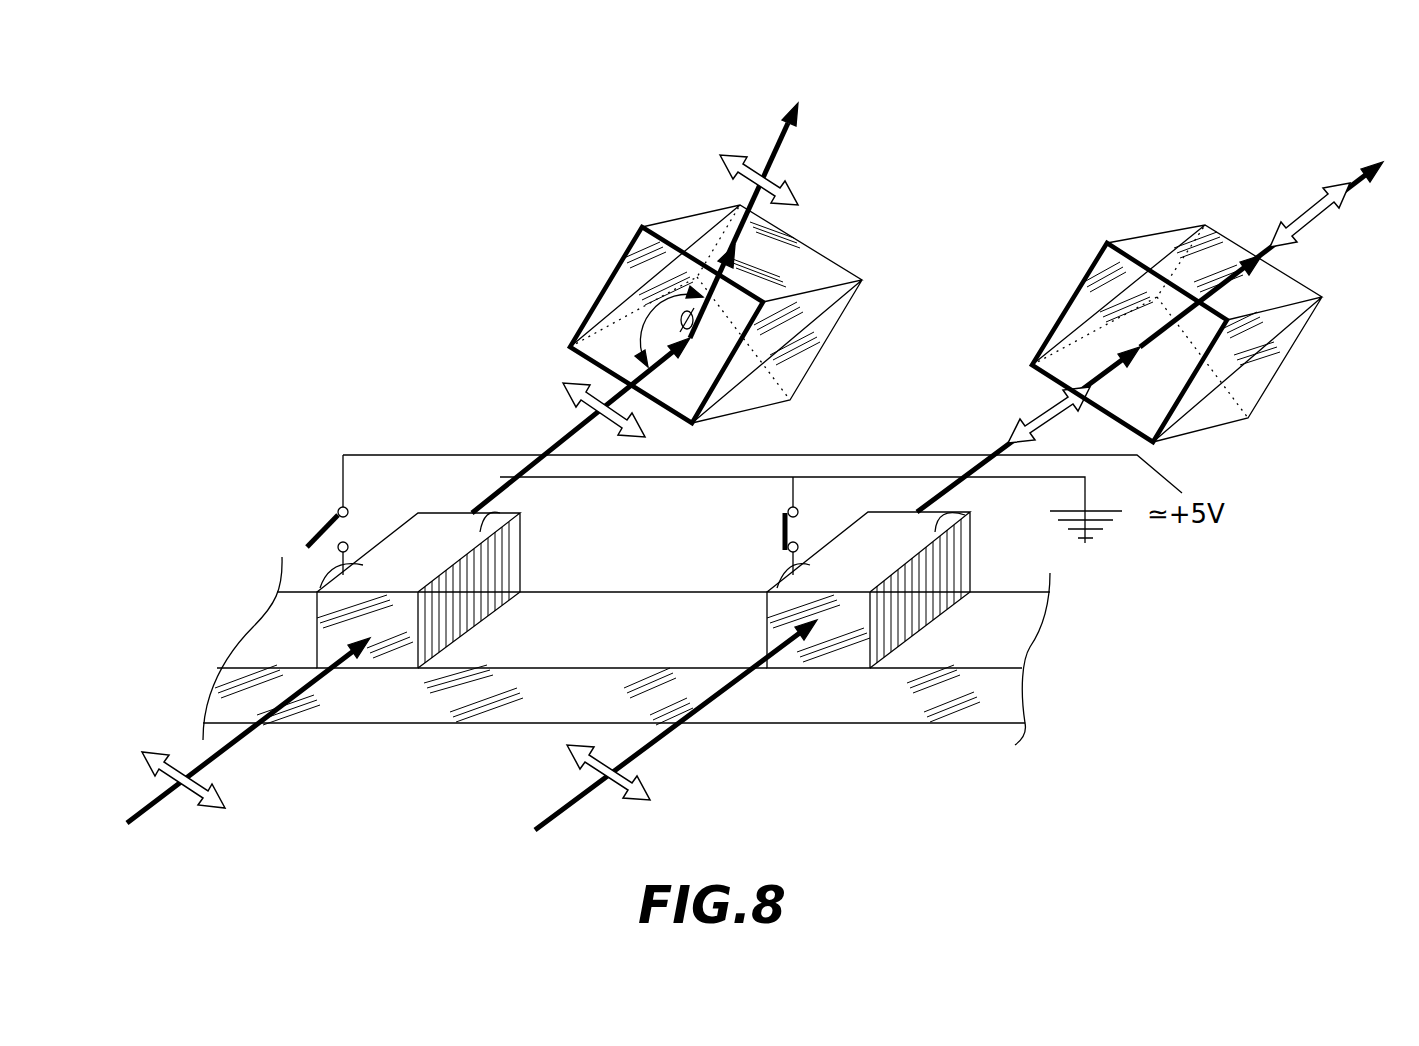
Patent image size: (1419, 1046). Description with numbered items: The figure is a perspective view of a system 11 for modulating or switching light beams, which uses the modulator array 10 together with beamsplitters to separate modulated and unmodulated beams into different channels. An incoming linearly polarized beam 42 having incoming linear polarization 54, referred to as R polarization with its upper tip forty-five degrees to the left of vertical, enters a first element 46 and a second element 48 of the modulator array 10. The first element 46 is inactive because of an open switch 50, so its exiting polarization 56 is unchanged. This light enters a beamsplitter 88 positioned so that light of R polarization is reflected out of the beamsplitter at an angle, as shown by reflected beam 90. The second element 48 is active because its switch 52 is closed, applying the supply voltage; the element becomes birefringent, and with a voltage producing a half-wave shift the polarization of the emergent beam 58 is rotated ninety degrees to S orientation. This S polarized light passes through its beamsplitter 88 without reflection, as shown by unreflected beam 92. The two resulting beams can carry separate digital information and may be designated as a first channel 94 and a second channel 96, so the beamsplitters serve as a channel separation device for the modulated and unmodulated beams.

The modulator array 10 is at (1002, 745).
The system for modulating or switching light beams 11 is at (1172, 703).
The incoming light beam 42 is at (557, 813).
The first element 46 is at (390, 618).
The second element 48 is at (842, 623).
The open switch 50 is at (308, 540).
The switch 52 is at (785, 543).
The incoming linear polarization 54 is at (570, 760).
The outgoing polarization 56 is at (580, 398).
The emergent beam 58 is at (1023, 423).
The beamsplitter 88 is at (1083, 298).
The reflected beam 90 is at (800, 190).
The unreflected beam 92 is at (1298, 228).
The channel 1 94 is at (793, 117).
The channel 2 96 is at (1370, 170).